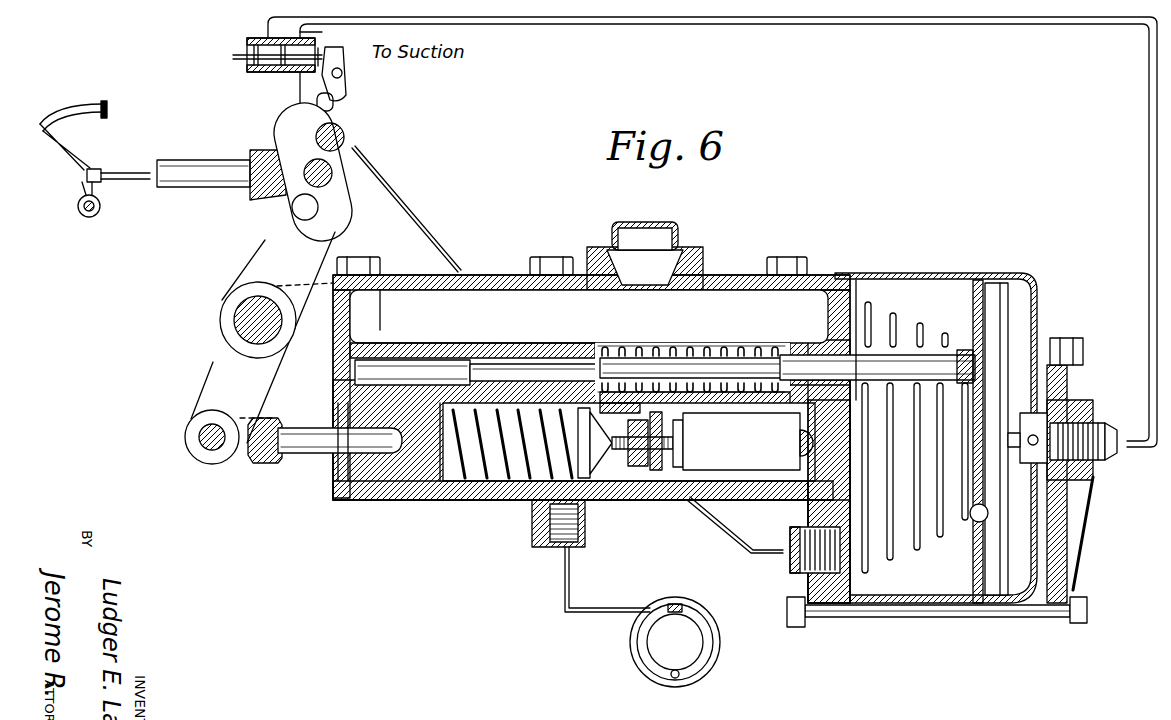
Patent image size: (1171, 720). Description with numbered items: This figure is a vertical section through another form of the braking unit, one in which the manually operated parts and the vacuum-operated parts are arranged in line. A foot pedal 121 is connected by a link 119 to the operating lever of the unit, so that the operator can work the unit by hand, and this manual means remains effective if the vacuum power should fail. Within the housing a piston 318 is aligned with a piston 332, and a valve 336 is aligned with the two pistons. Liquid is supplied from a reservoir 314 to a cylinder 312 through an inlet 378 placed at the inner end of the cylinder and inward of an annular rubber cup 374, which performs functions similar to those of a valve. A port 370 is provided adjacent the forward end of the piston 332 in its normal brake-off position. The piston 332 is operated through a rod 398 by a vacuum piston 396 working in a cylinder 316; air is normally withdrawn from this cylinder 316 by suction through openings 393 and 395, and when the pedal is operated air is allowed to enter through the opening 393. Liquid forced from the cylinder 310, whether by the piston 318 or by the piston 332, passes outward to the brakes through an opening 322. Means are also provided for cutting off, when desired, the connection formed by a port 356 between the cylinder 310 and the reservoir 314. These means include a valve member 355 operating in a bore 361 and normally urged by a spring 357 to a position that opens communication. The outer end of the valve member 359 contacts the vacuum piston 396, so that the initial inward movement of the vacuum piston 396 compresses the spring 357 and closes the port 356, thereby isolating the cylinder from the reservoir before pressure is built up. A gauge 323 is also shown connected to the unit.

The foot pedal 121 is at (78, 163).
The link 119 is at (207, 168).
The reservoir 314 is at (457, 306).
The bore 361 is at (422, 372).
The port 356 is at (483, 350).
The valve member 355 is at (571, 366).
The spring 357 is at (655, 348).
The inlet 378 is at (653, 405).
The valve member 359 is at (874, 362).
The cylinder 316 is at (948, 296).
The vacuum piston 396 is at (988, 310).
The port 370 is at (748, 441).
The piston 318 is at (410, 474).
The cylinder 310 is at (482, 474).
The opening 322 is at (535, 506).
The valve 336 is at (594, 468).
The annular rubber cup 374 is at (668, 466).
The cylinder 312 is at (740, 456).
The piston 332 is at (813, 488).
The rod 398 is at (807, 512).
The opening 393 is at (1087, 464).
The opening 395 is at (843, 557).
The gauge 323 is at (678, 608).